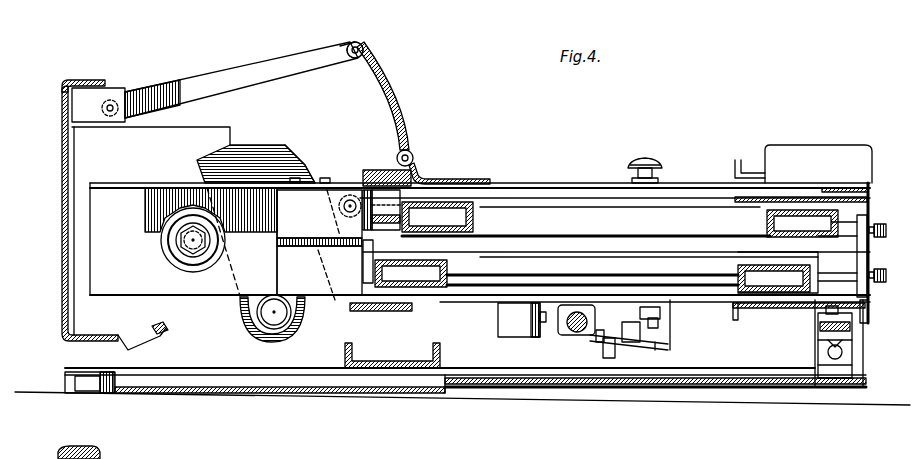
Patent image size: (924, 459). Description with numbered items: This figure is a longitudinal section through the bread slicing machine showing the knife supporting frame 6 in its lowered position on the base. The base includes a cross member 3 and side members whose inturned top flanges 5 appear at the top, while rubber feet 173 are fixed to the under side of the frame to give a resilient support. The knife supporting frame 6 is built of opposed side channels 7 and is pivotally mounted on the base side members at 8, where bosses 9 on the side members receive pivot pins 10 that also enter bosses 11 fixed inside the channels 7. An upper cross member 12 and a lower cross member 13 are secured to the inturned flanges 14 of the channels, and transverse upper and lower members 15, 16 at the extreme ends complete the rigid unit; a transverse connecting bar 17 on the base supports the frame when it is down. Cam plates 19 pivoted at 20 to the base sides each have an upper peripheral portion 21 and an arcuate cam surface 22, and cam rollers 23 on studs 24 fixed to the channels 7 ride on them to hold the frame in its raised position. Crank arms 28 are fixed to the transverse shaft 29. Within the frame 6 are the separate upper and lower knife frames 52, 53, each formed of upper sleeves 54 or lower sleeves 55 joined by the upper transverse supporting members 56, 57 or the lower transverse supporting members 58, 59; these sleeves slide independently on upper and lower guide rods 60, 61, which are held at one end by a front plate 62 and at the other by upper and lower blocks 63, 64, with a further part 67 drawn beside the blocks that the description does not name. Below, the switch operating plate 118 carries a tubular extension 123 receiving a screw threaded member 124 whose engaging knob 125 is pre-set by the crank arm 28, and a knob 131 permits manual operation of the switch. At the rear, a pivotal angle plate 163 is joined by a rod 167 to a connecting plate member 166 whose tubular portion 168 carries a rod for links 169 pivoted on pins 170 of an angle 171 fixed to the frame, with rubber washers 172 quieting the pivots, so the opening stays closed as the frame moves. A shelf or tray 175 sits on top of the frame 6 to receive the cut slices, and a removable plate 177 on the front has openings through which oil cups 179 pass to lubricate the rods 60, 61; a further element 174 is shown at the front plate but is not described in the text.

The cross member 3 is at (442, 354).
The inturned top flange 5 is at (85, 80).
The knife supporting frame 6 is at (535, 183).
The side channel 7 is at (600, 183).
The pivot mounting 8 is at (188, 238).
The boss 9 is at (62, 211).
The pivot pin 10 is at (200, 258).
The boss 11 is at (165, 255).
The upper cross member 12 is at (375, 170).
The lower cross member 13 is at (388, 311).
The inturned flange 14 is at (588, 183).
The upper transverse member 15 is at (790, 198).
The lower transverse member 16 is at (790, 308).
The transverse connecting bar 17 is at (860, 330).
The cam plate 19 is at (296, 148).
The cam plate pivot 20 is at (274, 318).
The upper peripheral portion 21 is at (256, 150).
The cam surface 22 is at (322, 178).
The cam roller 23 is at (330, 212).
The stud 24 is at (325, 250).
The crank arm 28 is at (592, 340).
The transverse shaft 29 is at (566, 333).
The upper knife frame 52 is at (672, 207).
The lower knife frame 53 is at (560, 250).
The upper sleeve 54 is at (700, 207).
The lower sleeve 55 is at (720, 295).
The upper transverse supporting member 56 is at (870, 192).
The upper transverse supporting member 57 is at (438, 202).
The lower transverse supporting member 58 is at (812, 272).
The lower transverse supporting member 59 is at (448, 268).
The upper side guide rod 60 is at (370, 220).
The lower side guide rod 61 is at (868, 292).
The front plate 62 is at (868, 245).
The upper block 63 is at (277, 212).
The lower block 64 is at (277, 266).
The post 67 is at (375, 259).
The plate 118 is at (665, 348).
The tubular extension 123 is at (640, 342).
The screw threaded member 124 is at (613, 352).
The engaging knob 125 is at (605, 358).
The knob 131 is at (648, 160).
The pivotal angle plate 163 is at (488, 182).
The connecting plate member 166 is at (392, 82).
The rod 167 is at (364, 50).
The tubular portion 168 is at (356, 42).
The link 169 is at (236, 68).
The pin 170 is at (125, 98).
The angle 171 is at (100, 95).
The rubber washer 172 is at (352, 48).
The rubber foot 173 is at (98, 395).
The knob 174 is at (886, 230).
The supporting shelf or tray 175 is at (872, 152).
The removable plate 177 is at (868, 310).
The oil cup 179 is at (886, 276).